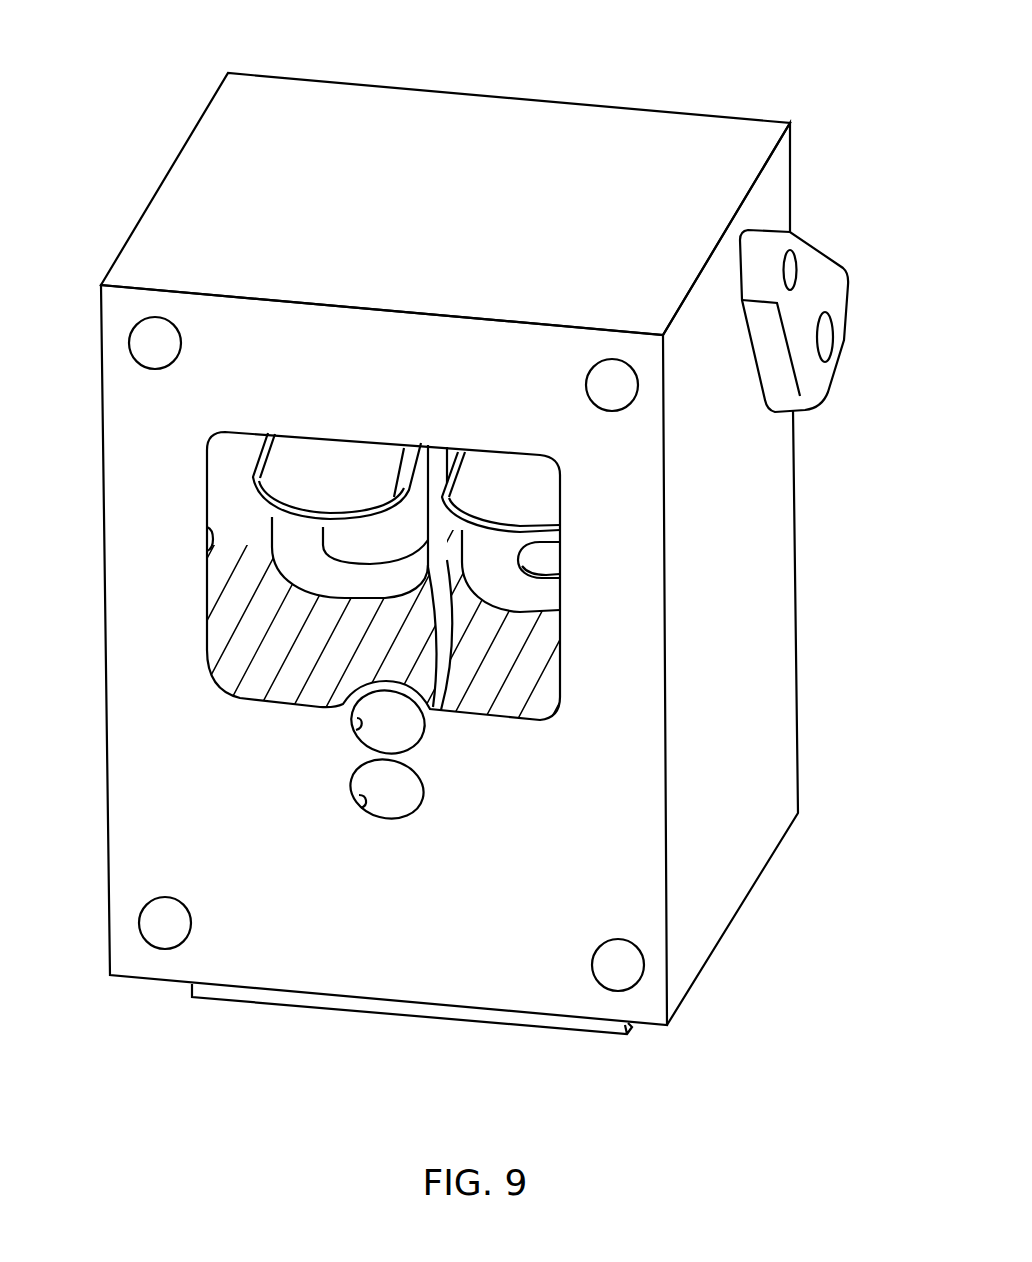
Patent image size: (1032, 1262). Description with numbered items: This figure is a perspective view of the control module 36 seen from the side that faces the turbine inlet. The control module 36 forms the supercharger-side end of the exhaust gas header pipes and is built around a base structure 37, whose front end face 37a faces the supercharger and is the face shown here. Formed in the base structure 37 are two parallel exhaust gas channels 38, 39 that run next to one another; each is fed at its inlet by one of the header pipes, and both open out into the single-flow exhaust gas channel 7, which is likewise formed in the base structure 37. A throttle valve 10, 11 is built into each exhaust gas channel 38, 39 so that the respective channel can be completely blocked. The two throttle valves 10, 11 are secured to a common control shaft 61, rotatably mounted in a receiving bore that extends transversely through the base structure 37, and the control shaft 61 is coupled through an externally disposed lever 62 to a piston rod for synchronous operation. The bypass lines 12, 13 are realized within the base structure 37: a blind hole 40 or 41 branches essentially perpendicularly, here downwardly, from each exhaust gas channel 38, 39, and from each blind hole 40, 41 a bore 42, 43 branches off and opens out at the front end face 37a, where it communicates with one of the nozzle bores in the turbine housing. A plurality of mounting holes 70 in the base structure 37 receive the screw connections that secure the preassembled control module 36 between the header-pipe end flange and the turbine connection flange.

The control module 36 is at (468, 136).
The base structure 37 is at (768, 637).
The front end face 37a is at (428, 946).
The lever 62 is at (809, 316).
The control shaft 61 is at (828, 340).
The mounting holes 70 is at (158, 342).
The single-flow exhaust gas channel 7 is at (212, 540).
The throttle valve 10 is at (320, 468).
The throttle valve 11 is at (505, 488).
The exhaust gas channel 38 is at (295, 538).
The exhaust gas channel 39 is at (548, 598).
The blind hole 40 is at (377, 552).
The blind hole 41 is at (545, 553).
The bypass line 12 is at (410, 732).
The bypass line 13 is at (403, 795).
The bore 42 is at (360, 732).
The bore 43 is at (368, 807).